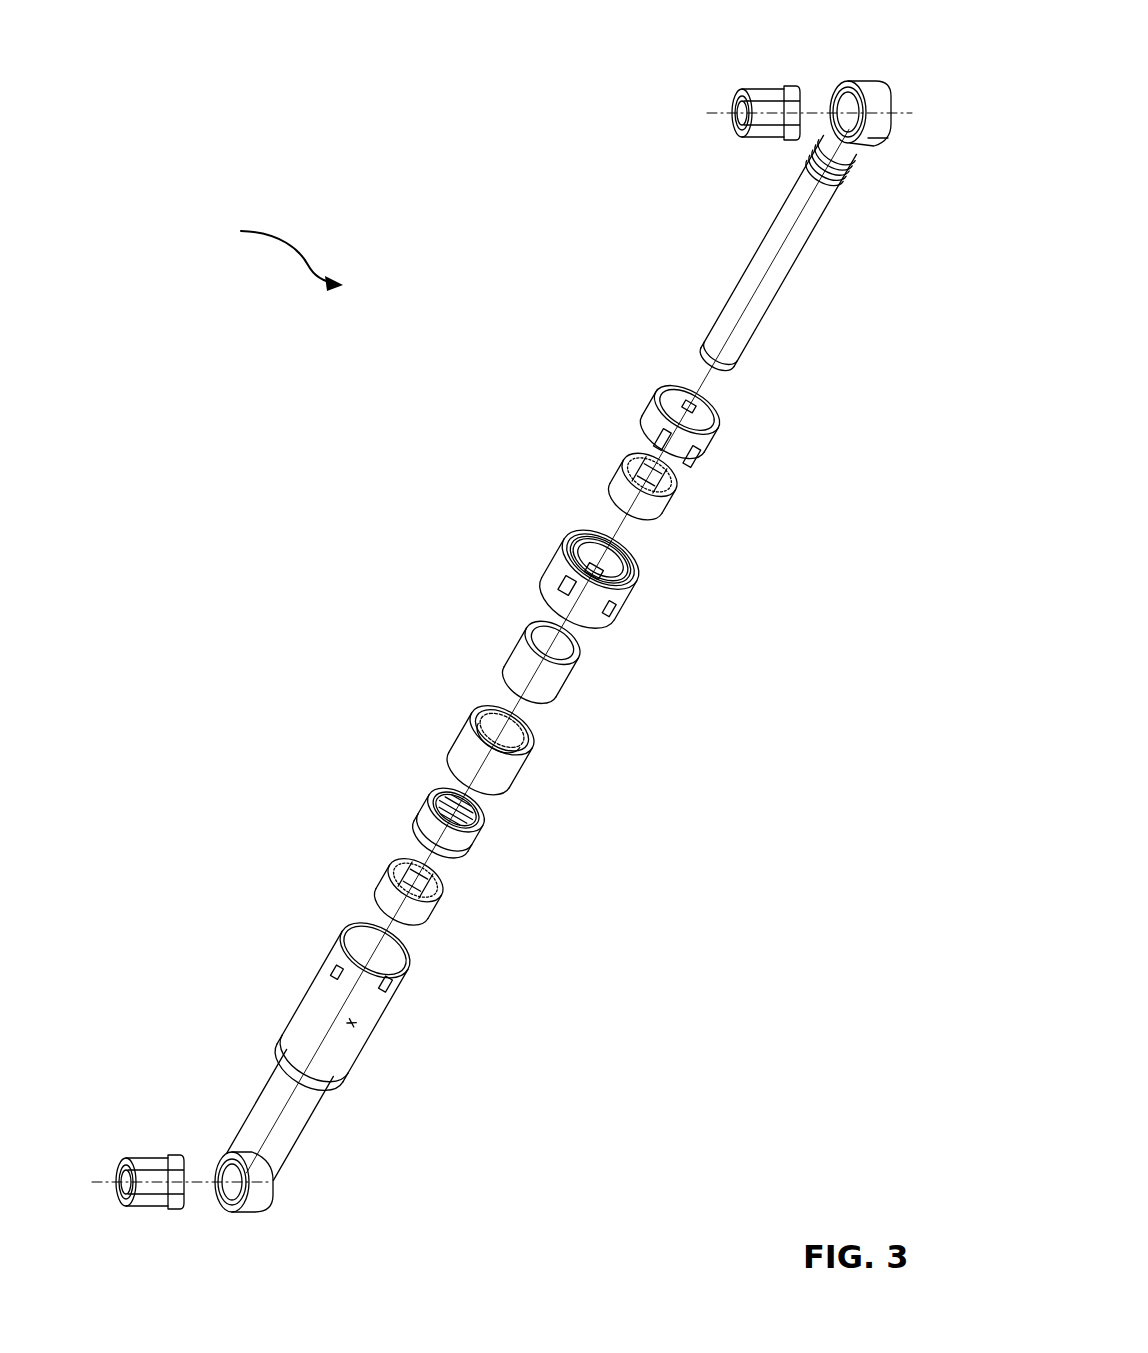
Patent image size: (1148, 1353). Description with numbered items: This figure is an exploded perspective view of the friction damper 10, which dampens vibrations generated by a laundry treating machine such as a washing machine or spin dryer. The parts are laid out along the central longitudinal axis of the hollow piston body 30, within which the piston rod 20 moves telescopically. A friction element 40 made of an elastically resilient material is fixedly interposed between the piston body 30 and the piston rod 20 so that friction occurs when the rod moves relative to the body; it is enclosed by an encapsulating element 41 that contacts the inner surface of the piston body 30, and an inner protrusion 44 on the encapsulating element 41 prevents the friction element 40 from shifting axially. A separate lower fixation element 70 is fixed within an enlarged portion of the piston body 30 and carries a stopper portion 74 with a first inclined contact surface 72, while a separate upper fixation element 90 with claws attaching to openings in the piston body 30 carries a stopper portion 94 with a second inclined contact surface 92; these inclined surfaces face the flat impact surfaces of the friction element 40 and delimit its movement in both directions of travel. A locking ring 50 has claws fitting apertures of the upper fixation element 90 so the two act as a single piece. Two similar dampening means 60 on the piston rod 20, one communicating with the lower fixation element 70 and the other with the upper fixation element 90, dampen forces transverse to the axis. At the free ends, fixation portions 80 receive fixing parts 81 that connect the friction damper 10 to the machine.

The friction damper 10 is at (269, 253).
The piston rod 20 is at (740, 255).
The piston body 30 is at (338, 1061).
The friction element 40 is at (487, 648).
The encapsulating element 41 is at (543, 750).
The inner protrusion 44 is at (473, 714).
The locking ring 50 is at (727, 422).
The dampening means 60 is at (574, 703).
The lower fixation element 70 is at (502, 825).
The first inclined contact surface 72 is at (422, 780).
The stopper portion 74 is at (407, 804).
The fixation portion 80 is at (876, 151).
The fixing part 81 is at (436, 621).
The upper fixation element 90 is at (627, 587).
The second inclined contact surface 92 is at (551, 529).
The stopper portion 94 is at (588, 518).